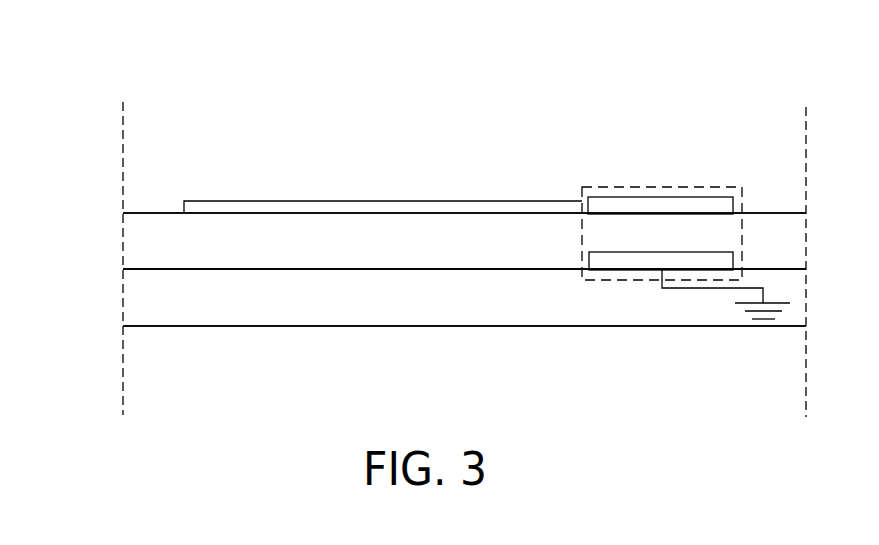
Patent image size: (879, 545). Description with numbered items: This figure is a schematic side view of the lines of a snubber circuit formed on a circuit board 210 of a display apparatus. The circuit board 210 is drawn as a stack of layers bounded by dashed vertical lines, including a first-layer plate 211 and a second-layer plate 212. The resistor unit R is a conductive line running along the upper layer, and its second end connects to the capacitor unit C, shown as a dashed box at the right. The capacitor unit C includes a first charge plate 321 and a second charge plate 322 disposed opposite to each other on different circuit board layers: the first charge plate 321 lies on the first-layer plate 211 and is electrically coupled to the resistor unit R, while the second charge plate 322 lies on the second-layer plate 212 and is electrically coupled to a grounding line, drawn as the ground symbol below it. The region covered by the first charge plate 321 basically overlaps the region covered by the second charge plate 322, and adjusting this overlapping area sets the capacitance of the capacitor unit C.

The circuit board 210 is at (540, 66).
The first-layer plate 211 is at (132, 243).
The second-layer plate 212 is at (130, 306).
The resistor unit R is at (398, 201).
The capacitor unit C is at (742, 187).
The first charge plate 321 is at (682, 197).
The second charge plate 322 is at (718, 252).